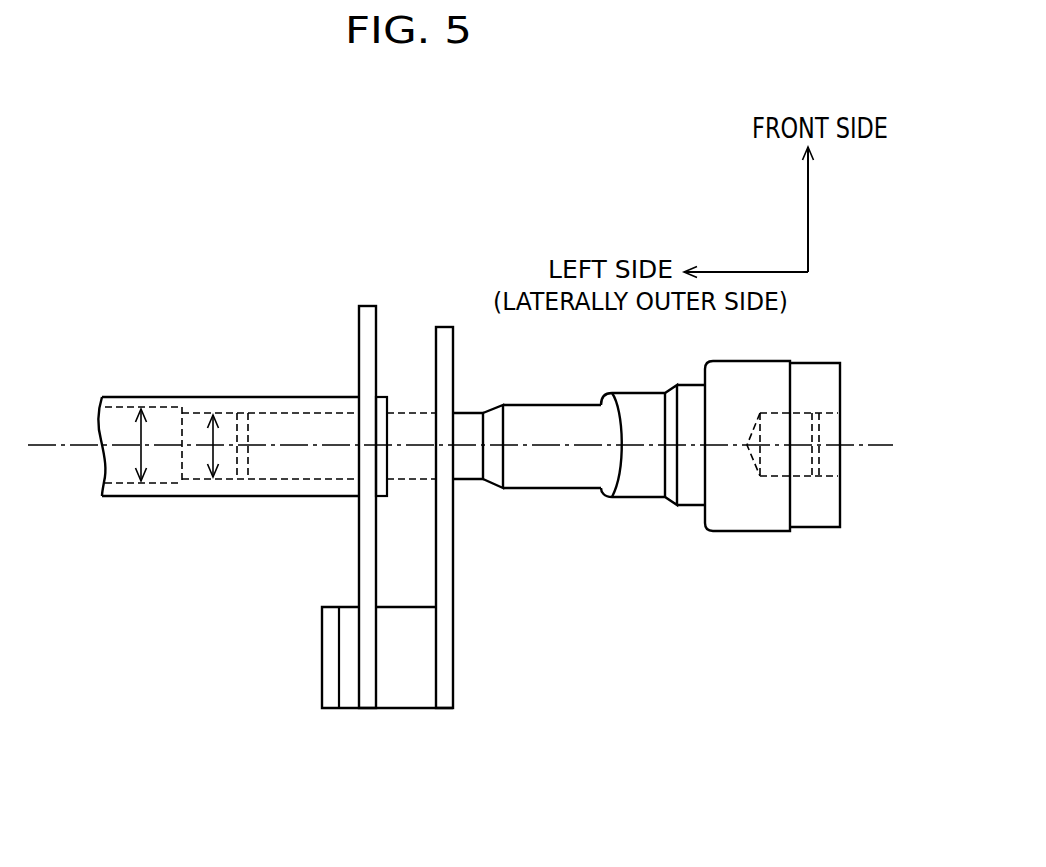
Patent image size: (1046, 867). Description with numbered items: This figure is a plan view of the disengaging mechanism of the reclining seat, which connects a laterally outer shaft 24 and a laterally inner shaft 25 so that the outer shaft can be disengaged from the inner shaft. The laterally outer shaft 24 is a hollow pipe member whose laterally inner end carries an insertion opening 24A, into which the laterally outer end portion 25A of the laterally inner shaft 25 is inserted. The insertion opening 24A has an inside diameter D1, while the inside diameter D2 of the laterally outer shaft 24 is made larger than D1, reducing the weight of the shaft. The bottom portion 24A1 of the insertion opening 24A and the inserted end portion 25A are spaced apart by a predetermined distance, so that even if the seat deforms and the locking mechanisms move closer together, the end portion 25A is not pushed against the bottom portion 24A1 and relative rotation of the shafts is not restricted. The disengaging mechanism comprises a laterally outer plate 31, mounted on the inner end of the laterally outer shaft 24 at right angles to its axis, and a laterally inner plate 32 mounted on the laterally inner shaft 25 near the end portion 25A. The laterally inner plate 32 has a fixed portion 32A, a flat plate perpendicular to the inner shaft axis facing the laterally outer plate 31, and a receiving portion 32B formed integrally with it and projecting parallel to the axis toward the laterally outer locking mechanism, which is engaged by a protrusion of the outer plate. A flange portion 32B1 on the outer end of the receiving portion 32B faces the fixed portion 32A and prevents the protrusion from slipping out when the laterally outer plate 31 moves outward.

The laterally outer shaft 24 is at (120, 395).
The insertion opening 24A is at (319, 480).
The bottom portion of the insertion opening 24A1 is at (184, 440).
The laterally inner shaft 25 is at (553, 405).
The laterally outer end portion of the laterally inner shaft 25A is at (234, 444).
The laterally outer plate 31 is at (367, 305).
The laterally inner plate 32 is at (382, 514).
The fixed portion 32A is at (453, 553).
The receiving portion 32B is at (403, 688).
The flange portion 32B1 is at (285, 657).
The inside diameter of the insertion opening D1 is at (212, 452).
The inside diameter of the laterally outer shaft D2 is at (140, 452).